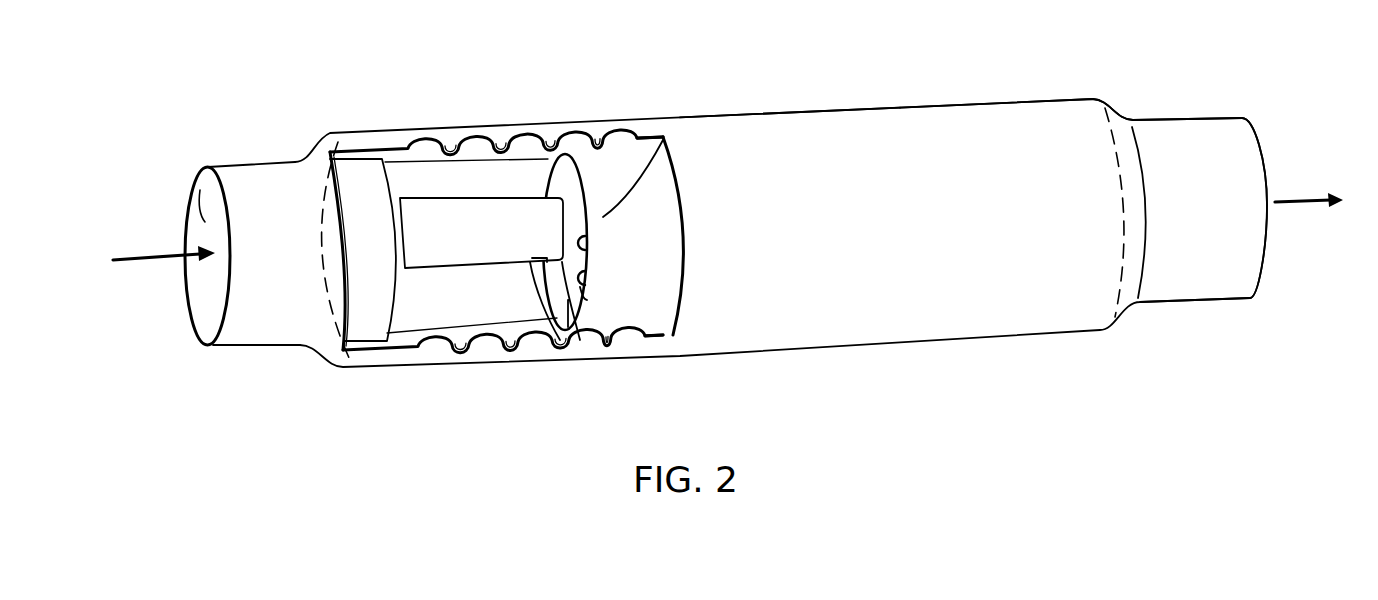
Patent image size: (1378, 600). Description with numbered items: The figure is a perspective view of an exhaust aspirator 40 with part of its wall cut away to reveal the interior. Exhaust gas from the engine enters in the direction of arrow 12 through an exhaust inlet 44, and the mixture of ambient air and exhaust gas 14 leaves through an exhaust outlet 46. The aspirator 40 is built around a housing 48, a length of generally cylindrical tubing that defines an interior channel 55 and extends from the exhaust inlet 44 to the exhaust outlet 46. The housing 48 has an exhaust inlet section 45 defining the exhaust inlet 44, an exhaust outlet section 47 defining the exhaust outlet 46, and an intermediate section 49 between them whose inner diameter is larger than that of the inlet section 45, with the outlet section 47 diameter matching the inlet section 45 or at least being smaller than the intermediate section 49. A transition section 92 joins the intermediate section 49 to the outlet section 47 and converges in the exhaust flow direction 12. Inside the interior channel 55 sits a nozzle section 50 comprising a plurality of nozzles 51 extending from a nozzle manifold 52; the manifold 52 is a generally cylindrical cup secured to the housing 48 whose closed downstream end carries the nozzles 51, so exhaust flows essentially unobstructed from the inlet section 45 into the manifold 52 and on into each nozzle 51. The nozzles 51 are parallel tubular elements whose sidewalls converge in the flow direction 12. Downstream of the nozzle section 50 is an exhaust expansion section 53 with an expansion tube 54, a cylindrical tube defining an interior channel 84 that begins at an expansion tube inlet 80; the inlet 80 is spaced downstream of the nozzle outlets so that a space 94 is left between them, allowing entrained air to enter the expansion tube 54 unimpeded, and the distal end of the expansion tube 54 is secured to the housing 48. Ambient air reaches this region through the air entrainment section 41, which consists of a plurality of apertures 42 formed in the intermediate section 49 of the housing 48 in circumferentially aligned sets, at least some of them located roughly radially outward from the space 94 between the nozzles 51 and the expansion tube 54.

The direction arrow 12 is at (133, 253).
The directional arrows 14 is at (1307, 197).
The exhaust aspirator 40 is at (823, 112).
The air entrainment section 41 is at (478, 124).
The apertures 42 is at (422, 138).
The exhaust inlet 44 is at (212, 322).
The exhaust inlet section 45 is at (260, 173).
The exhaust outlet 46 is at (1267, 177).
The exhaust outlet section 47 is at (1187, 125).
The housing 48 is at (728, 114).
The intermediate section 49 is at (983, 105).
The nozzle section 50 is at (537, 163).
The nozzles 51 is at (540, 190).
The nozzle manifold 52 is at (358, 297).
The exhaust expansion section 53 is at (668, 292).
The expansion tube 54 is at (657, 307).
The interior channel 55 is at (200, 202).
The expansion tube inlet 80 is at (585, 287).
The interior channel of expansion tube 84 is at (585, 250).
The transition section 92 is at (1107, 105).
The space 94 is at (572, 332).